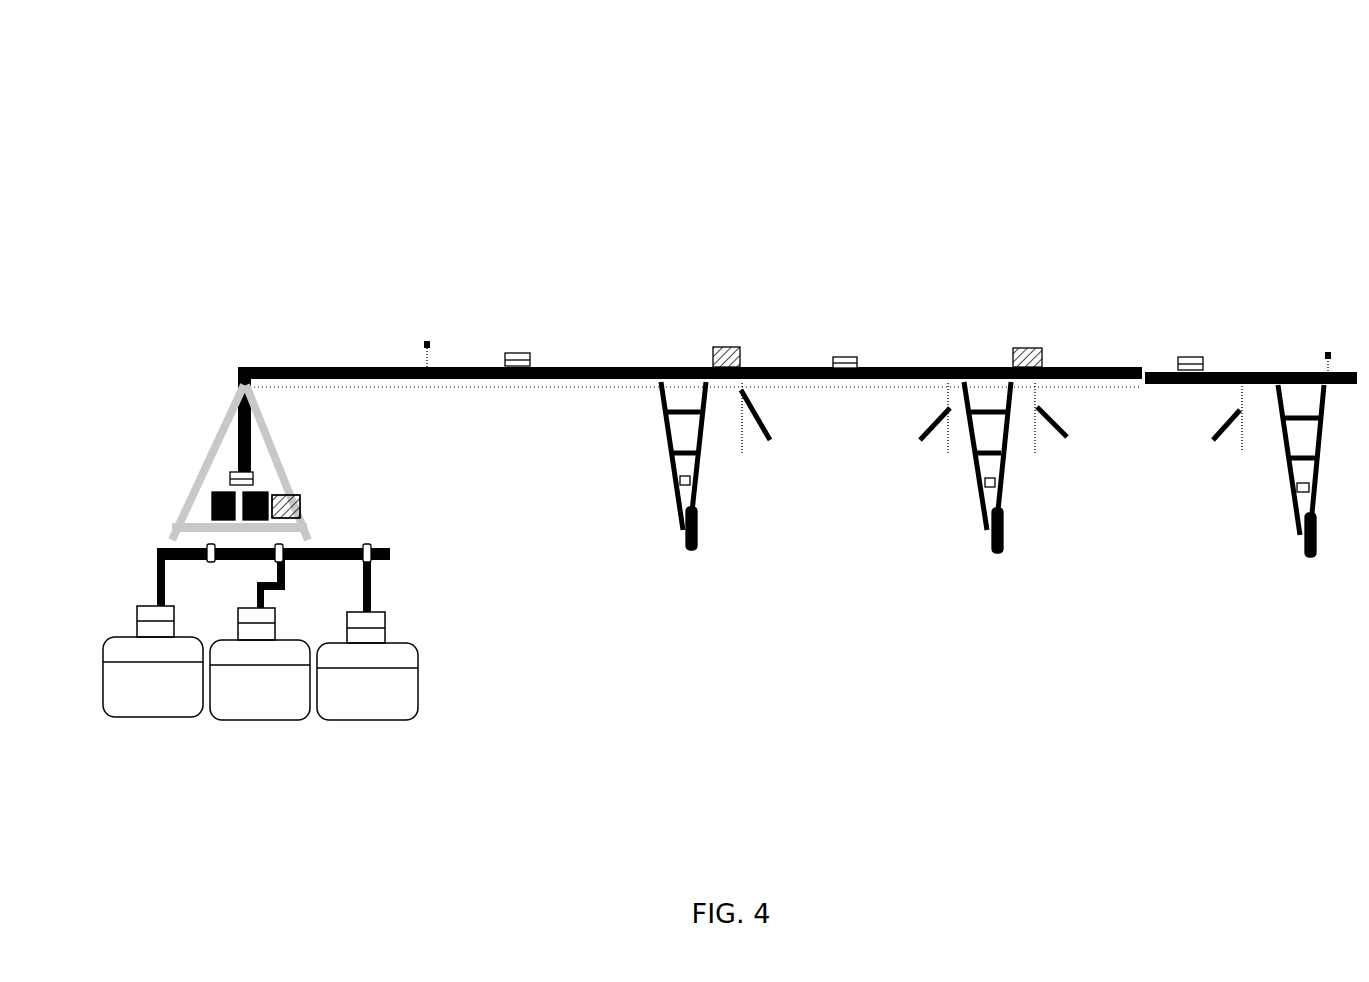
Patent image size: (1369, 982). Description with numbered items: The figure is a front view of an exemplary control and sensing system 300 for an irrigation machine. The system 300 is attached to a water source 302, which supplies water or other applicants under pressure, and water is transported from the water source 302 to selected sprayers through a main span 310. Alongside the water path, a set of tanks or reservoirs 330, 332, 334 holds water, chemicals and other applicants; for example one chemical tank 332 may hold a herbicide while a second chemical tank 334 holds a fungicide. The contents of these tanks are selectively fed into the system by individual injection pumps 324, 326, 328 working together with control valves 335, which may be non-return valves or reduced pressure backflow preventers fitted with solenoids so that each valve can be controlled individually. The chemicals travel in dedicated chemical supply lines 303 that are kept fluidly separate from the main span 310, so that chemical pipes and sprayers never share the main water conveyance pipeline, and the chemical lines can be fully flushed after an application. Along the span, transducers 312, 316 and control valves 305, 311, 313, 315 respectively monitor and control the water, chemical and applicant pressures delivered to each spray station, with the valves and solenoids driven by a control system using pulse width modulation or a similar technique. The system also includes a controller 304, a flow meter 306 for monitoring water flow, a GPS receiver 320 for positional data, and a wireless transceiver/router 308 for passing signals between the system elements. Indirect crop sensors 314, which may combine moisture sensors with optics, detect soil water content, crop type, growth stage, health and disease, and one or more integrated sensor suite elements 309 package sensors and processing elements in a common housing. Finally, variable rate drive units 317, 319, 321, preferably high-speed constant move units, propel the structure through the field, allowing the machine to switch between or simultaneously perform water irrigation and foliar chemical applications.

The control and sensing system 300 is at (816, 34).
The water source 302 is at (340, 532).
The chemical supply lines 303 is at (620, 381).
The controller 304 is at (213, 493).
The control valve 305 is at (236, 472).
The flow meter 306 is at (261, 494).
The wireless transceiver/router 308 is at (300, 506).
The integrated sensor suite element 309 is at (423, 337).
The main span 310 is at (486, 367).
The control valve 311 is at (526, 353).
The transducer 312 is at (727, 347).
The control valve 313 is at (833, 362).
The indirect crop sensors 314 is at (771, 437).
The control valve 315 is at (1185, 357).
The transducer 316 is at (1031, 348).
The variable rate drive unit 317 is at (690, 480).
The variable rate drive unit 319 is at (995, 481).
The GPS receiver 320 is at (1328, 352).
The variable rate drive unit 321 is at (1310, 487).
The injection pump 324 is at (142, 603).
The injection pump 326 is at (262, 607).
The injection pump 328 is at (385, 623).
The tank 330 is at (150, 708).
The chemical tank 332 is at (257, 710).
The chemical tank 334 is at (368, 713).
The control valves 335 is at (215, 558).